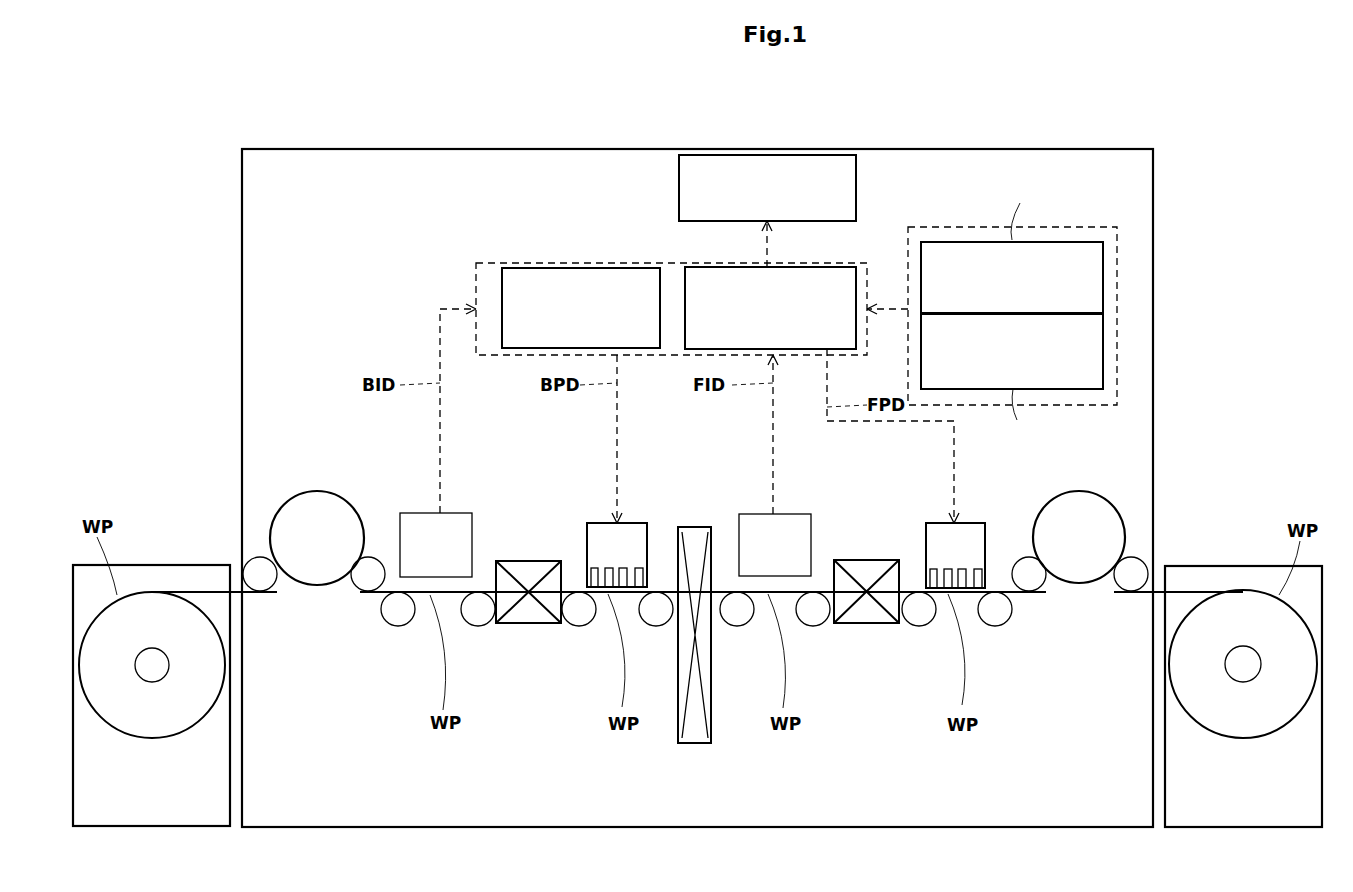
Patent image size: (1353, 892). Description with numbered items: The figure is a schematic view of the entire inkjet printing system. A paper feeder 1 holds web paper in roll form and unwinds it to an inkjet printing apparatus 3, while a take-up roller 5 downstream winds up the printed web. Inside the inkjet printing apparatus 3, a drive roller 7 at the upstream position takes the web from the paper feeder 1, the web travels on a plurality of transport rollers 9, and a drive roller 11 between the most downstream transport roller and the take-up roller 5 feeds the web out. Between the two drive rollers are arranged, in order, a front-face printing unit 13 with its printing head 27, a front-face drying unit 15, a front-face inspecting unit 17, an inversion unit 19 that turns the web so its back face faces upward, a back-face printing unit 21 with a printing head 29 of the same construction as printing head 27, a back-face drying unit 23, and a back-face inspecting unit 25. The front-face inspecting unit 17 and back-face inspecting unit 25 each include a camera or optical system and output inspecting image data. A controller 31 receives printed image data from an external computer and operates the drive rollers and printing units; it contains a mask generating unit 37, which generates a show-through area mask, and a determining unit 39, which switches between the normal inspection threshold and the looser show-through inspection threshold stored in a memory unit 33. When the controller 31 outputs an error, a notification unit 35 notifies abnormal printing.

The paper feeder 1 is at (1232, 565).
The inkjet printing apparatus 3 is at (786, 135).
The take-up roller 5 is at (165, 563).
The drive roller 7 is at (1110, 493).
The transport rollers 9 is at (401, 627).
The drive roller 11 is at (345, 495).
The front-face printing unit 13 is at (968, 523).
The front-face drying unit 15 is at (857, 560).
The front-face inspecting unit 17 is at (800, 514).
The inversion unit 19 is at (697, 527).
The back-face printing unit 21 is at (635, 523).
The back-face drying unit 23 is at (518, 561).
The back-face inspecting unit 25 is at (418, 513).
The printing head 27 is at (978, 569).
The printing head 29 is at (639, 568).
The controller 31 is at (545, 262).
The memory unit 33 is at (1068, 225).
The notification unit 35 is at (856, 185).
The mask generating unit 37 is at (615, 268).
The determining unit 39 is at (684, 267).